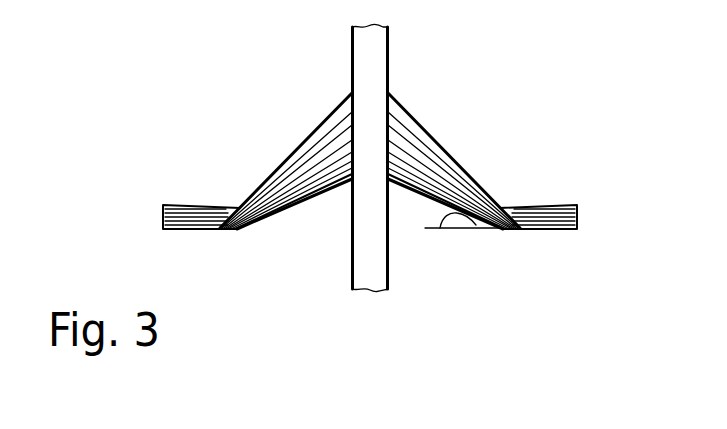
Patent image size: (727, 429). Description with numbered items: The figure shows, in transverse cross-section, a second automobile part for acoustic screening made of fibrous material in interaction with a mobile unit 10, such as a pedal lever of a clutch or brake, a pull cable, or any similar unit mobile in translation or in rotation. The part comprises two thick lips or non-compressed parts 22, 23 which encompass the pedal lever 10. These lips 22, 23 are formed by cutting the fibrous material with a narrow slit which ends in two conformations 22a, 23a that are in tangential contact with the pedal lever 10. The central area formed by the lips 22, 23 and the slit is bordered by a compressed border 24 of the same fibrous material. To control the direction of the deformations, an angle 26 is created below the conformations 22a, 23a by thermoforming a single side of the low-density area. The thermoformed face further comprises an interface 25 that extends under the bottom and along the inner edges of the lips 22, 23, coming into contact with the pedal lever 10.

The mobile unit 10 is at (370, 290).
The thick lip 22 is at (419, 96).
The conformation 22a is at (398, 127).
The thick lip 23 is at (311, 101).
The conformation 23a is at (344, 128).
The compressed border 24 is at (163, 213).
The interface 25 is at (297, 203).
The angle 26 is at (446, 216).